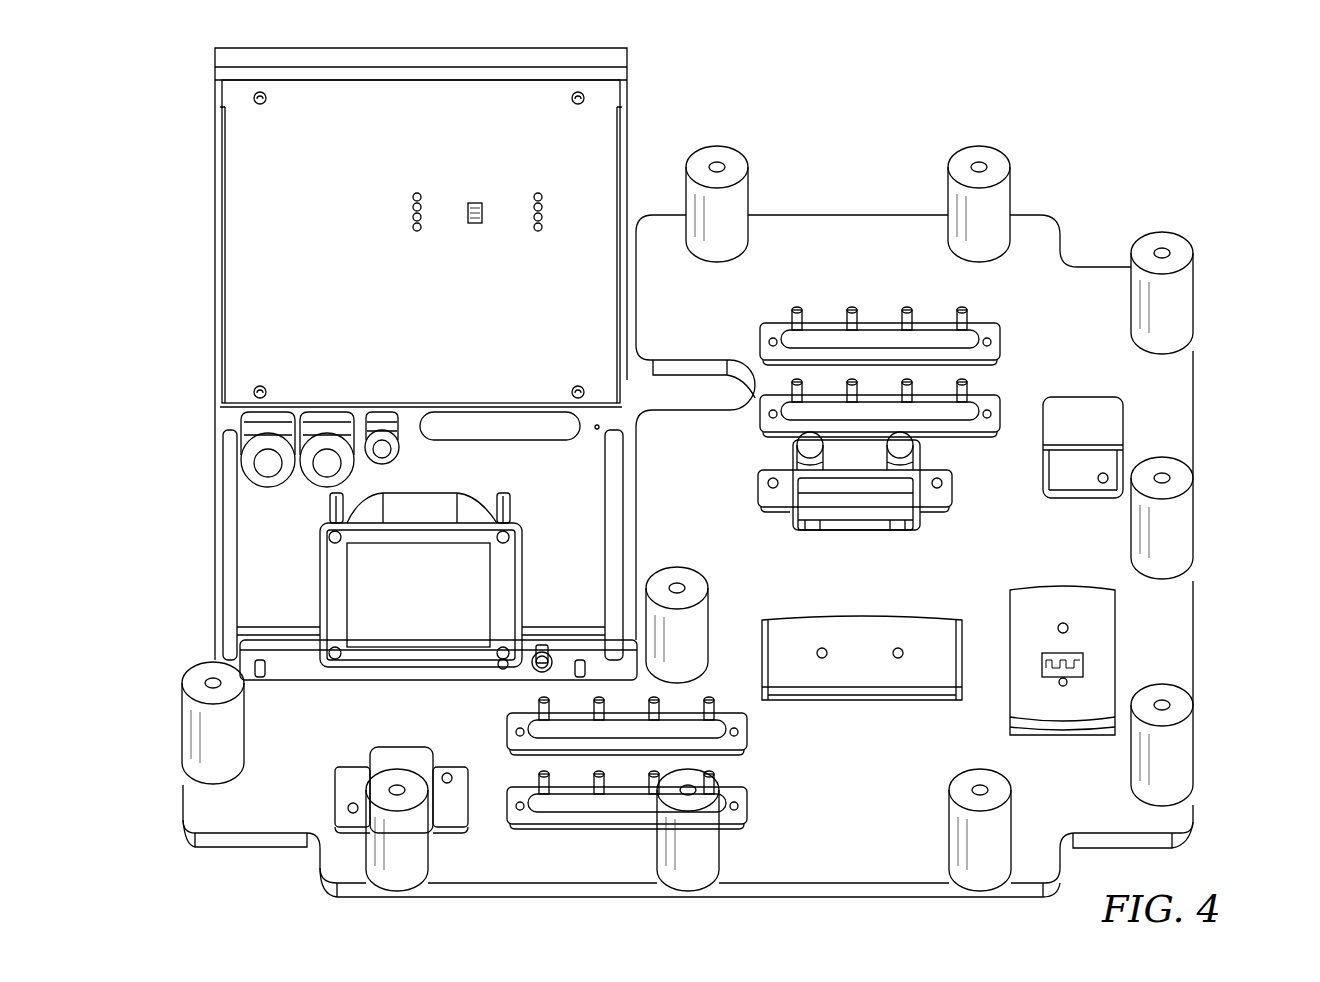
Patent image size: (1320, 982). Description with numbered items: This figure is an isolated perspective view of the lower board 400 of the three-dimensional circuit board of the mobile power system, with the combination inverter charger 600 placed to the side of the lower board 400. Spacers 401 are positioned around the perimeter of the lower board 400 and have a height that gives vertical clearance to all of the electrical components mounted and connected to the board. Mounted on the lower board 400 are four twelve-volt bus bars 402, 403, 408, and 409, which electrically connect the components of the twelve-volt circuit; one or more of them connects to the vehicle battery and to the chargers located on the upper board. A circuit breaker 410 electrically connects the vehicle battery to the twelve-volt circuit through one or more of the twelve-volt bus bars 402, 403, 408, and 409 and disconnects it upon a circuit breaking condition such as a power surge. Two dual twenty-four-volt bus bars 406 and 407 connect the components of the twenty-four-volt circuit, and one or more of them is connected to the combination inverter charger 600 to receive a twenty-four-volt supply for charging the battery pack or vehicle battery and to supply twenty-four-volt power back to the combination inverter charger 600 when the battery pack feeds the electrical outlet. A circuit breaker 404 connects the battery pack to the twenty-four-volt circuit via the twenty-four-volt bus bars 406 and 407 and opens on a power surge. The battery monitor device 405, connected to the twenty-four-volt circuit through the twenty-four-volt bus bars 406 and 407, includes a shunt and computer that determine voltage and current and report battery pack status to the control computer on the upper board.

The lower board 400 is at (849, 880).
The spacers 401 is at (733, 202).
The 12V bus bar 402 is at (882, 335).
The 12V bus bar 403 is at (943, 408).
The circuit breaker 404 is at (1080, 418).
The battery monitor device 405 is at (834, 508).
The dual 24V bus bar 406 is at (1061, 596).
The dual 24V bus bar 407 is at (848, 654).
The 12V bus bar 408 is at (718, 727).
The 12V bus bar 409 is at (535, 800).
The circuit breaker 410 is at (383, 753).
The combination inverter charger 600 is at (247, 247).